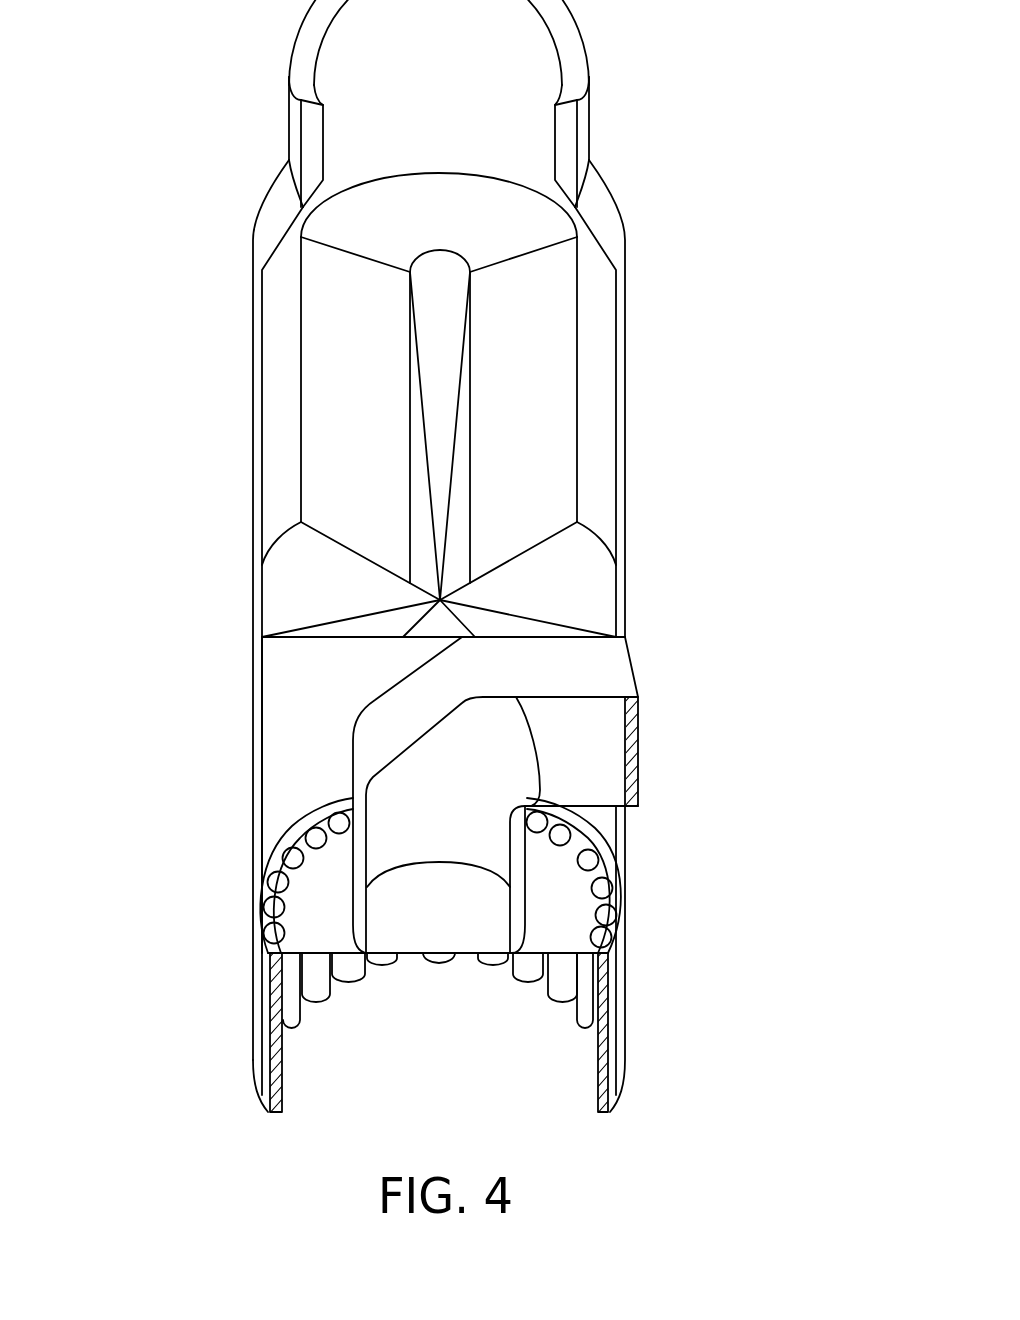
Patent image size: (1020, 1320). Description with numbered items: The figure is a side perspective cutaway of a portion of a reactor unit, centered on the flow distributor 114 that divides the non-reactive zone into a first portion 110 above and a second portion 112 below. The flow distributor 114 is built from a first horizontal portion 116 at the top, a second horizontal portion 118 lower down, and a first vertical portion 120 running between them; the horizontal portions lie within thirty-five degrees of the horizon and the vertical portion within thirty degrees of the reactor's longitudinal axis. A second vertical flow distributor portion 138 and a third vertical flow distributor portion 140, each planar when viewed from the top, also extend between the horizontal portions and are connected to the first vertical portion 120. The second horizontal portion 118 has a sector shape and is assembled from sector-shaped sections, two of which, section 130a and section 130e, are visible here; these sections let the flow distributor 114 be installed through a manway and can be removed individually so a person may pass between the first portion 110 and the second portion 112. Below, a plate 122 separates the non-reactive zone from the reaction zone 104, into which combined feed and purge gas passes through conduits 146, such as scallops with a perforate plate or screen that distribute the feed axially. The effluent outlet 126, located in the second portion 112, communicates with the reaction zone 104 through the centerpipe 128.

The reaction zone 104 is at (473, 1057).
The first portion of the non-reactive zone 110 is at (598, 485).
The second portion of the non-reactive zone 112 is at (300, 770).
The flow distributor 114 is at (556, 372).
The first horizontal portion 116 is at (552, 231).
The second horizontal portion 118 is at (598, 532).
The first vertical portion 120 is at (443, 307).
The plate 122 is at (558, 907).
The outlet 126 is at (637, 742).
The centerpipe 128 is at (515, 877).
The section of the second horizontal portion 130a is at (308, 585).
The section of the second horizontal portion 130e is at (587, 583).
The second vertical flow distributor portion 138 is at (345, 345).
The third vertical flow distributor portion 140 is at (553, 437).
The conduits 146 is at (273, 903).